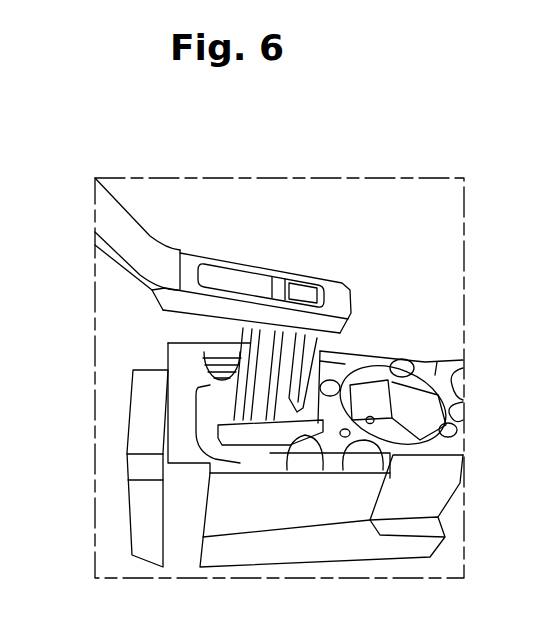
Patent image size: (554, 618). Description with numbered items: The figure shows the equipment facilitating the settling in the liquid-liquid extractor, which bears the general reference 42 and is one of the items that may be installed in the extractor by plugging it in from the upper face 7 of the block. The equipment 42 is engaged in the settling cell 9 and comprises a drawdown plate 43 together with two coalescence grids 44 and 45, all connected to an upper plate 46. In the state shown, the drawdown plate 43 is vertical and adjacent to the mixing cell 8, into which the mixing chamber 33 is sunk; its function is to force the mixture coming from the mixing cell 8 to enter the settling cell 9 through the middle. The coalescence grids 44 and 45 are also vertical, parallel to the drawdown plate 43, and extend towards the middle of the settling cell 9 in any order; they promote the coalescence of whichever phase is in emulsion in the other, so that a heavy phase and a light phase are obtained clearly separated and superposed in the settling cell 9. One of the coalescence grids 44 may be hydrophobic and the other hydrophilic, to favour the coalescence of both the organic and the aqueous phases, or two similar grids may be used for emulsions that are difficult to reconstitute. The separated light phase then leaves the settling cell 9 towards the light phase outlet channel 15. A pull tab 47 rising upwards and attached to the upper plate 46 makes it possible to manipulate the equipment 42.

The upper face 7 is at (437, 373).
The mixing cell 8 is at (380, 378).
The settling cell 9 is at (200, 403).
The light phase outlet channel 15 is at (245, 470).
The mixing chamber 33 is at (450, 448).
The equipment facilitating the settling 42 is at (72, 323).
The drawdown plate 43 is at (360, 352).
The coalescence grid 44 is at (272, 342).
The coalescence grid 45 is at (266, 345).
The upper plate 46 is at (228, 310).
The pull tab 47 is at (110, 276).